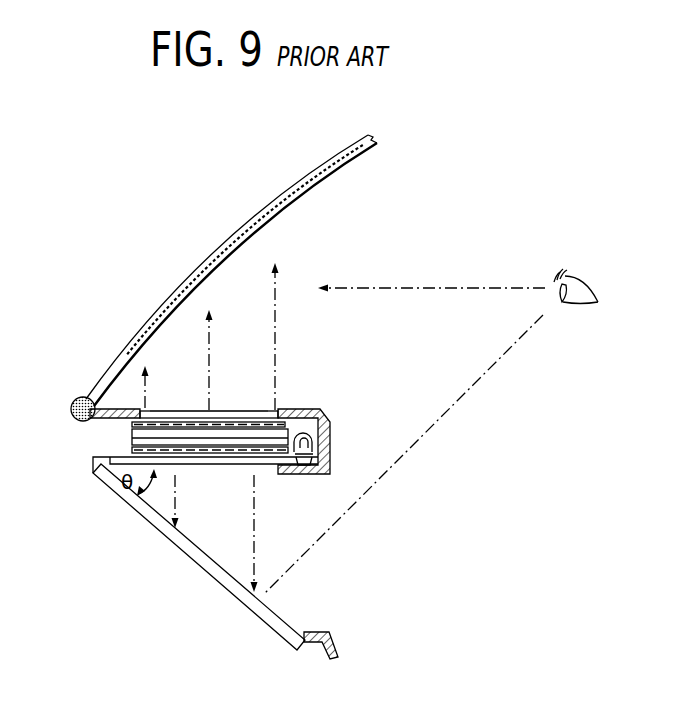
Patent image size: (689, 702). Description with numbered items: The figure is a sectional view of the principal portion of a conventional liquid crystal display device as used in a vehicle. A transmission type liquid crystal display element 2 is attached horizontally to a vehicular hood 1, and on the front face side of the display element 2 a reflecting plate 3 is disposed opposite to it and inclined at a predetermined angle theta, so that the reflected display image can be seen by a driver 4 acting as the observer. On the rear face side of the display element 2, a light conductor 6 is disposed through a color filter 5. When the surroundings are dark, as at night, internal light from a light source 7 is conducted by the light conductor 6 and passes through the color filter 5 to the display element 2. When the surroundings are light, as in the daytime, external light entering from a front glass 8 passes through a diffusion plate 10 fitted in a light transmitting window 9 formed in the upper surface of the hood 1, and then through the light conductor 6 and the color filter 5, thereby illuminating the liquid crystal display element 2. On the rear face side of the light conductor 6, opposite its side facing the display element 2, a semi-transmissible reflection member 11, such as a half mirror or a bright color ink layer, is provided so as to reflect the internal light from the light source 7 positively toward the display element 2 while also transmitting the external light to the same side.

The vehicular hood 1 is at (327, 414).
The transmission type liquid crystal display element 2 is at (267, 463).
The reflecting plate 3 is at (203, 560).
The driver 4 is at (578, 275).
The color filter 5 is at (170, 462).
The light conductor 6 is at (132, 437).
The light source 7 is at (312, 443).
The front glass 8 is at (282, 198).
The light transmitting window 9 is at (279, 410).
The diffusion plate 10 is at (150, 407).
The semi-transmissible reflection member 11 is at (237, 410).